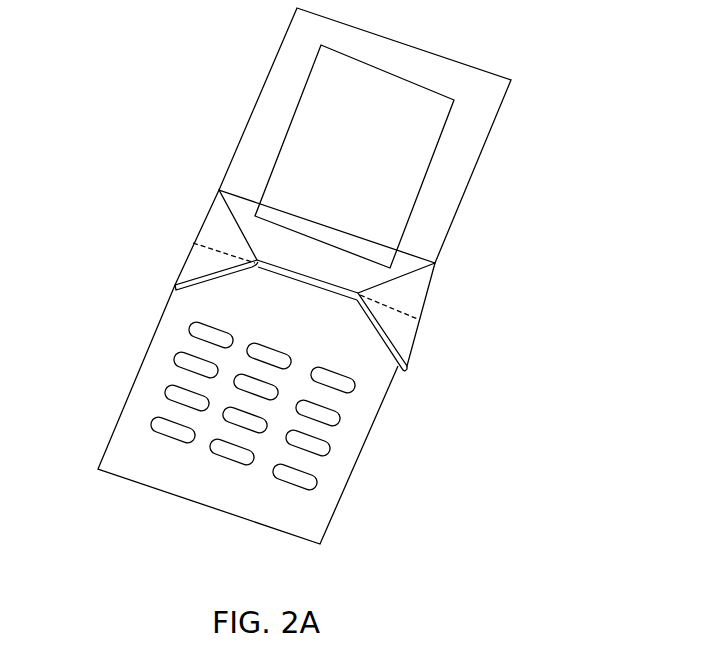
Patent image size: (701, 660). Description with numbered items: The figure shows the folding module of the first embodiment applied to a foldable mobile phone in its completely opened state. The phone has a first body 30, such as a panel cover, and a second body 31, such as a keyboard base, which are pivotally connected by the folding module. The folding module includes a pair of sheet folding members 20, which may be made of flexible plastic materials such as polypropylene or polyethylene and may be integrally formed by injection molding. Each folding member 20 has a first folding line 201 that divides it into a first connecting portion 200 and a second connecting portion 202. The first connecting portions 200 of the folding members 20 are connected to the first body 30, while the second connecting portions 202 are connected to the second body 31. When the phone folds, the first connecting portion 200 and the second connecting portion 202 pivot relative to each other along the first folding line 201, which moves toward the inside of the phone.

The first body 30 is at (278, 102).
The second body 31 is at (152, 395).
The sheet folding member 20 is at (311, 258).
The first connecting portion 200 is at (212, 218).
The first folding line 201 is at (222, 252).
The second connecting portion 202 is at (195, 260).